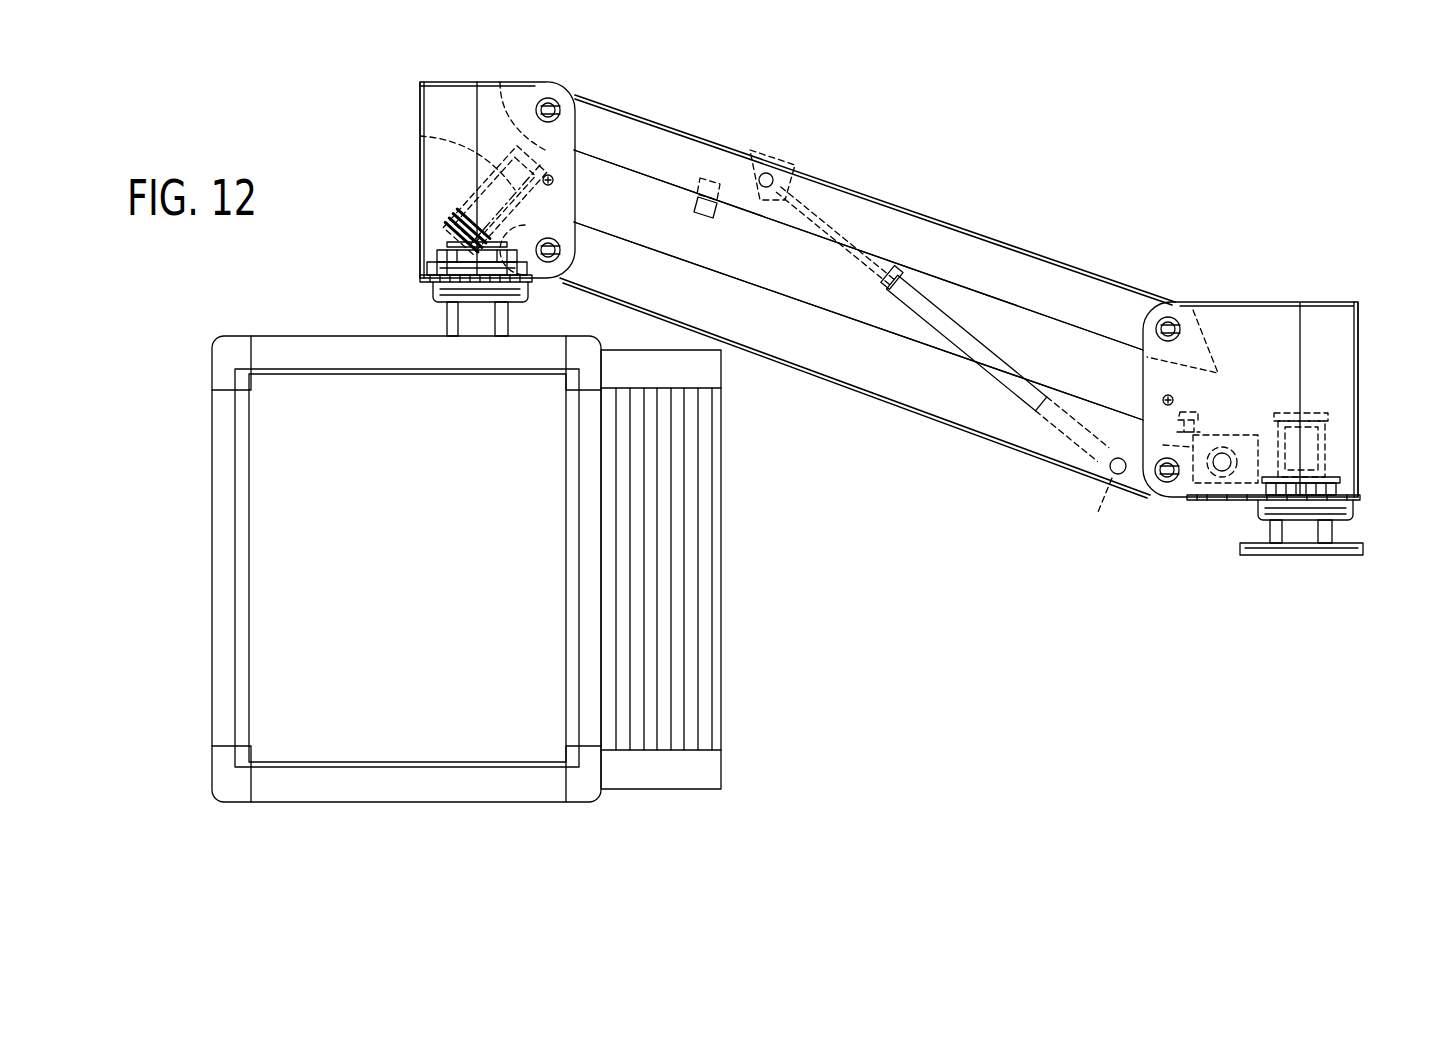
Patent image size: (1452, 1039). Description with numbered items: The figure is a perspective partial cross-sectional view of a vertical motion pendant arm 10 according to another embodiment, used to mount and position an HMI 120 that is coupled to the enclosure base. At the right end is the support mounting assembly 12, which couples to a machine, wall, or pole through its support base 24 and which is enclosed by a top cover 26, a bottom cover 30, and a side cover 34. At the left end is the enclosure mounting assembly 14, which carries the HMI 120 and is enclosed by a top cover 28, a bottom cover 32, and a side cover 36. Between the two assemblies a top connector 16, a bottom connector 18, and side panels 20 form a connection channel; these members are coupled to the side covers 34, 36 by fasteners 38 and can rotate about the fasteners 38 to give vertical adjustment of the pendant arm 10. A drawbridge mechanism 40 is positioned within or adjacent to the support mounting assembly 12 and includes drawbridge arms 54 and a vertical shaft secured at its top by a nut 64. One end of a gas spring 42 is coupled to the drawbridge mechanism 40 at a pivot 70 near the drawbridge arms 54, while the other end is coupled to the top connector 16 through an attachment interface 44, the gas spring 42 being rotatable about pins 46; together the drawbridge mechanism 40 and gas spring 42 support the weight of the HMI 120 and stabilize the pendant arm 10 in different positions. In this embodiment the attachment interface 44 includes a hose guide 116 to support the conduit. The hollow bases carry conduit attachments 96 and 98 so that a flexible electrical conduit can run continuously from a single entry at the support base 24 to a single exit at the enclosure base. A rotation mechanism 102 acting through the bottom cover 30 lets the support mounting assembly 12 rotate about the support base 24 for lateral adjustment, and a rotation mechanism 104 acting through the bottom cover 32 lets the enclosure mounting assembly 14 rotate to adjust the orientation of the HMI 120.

The vertical motion pendant arm 10 is at (1004, 164).
The support mounting assembly 12 is at (1263, 239).
The enclosure mounting assembly 14 is at (445, 76).
The top connector 16 is at (878, 222).
The bottom connector 18 is at (830, 345).
The side panels 20 is at (1020, 306).
The support base 24 is at (1302, 556).
The top cover 26 is at (1327, 302).
The top cover 28 is at (486, 82).
The bottom cover 30 is at (1355, 500).
The bottom cover 32 is at (425, 281).
The side cover 34 is at (1333, 346).
The side cover 36 is at (445, 190).
The fasteners 38 is at (560, 250).
The drawbridge mechanism 40 is at (1167, 524).
The gas springs 42 is at (930, 318).
The attachment interface 44 is at (745, 152).
The pins 46 is at (788, 165).
The drawbridge arms 54 is at (1213, 492).
The nut 64 is at (1160, 400).
The cylinder rod pivot 70 is at (1110, 500).
The conduit attachment 96 is at (440, 140).
The conduit attachment 98 is at (1340, 432).
The rotation mechanism 102 is at (1265, 528).
The rotation mechanism 104 is at (468, 300).
The hose guide 116 is at (706, 152).
The HMI 120 is at (690, 520).